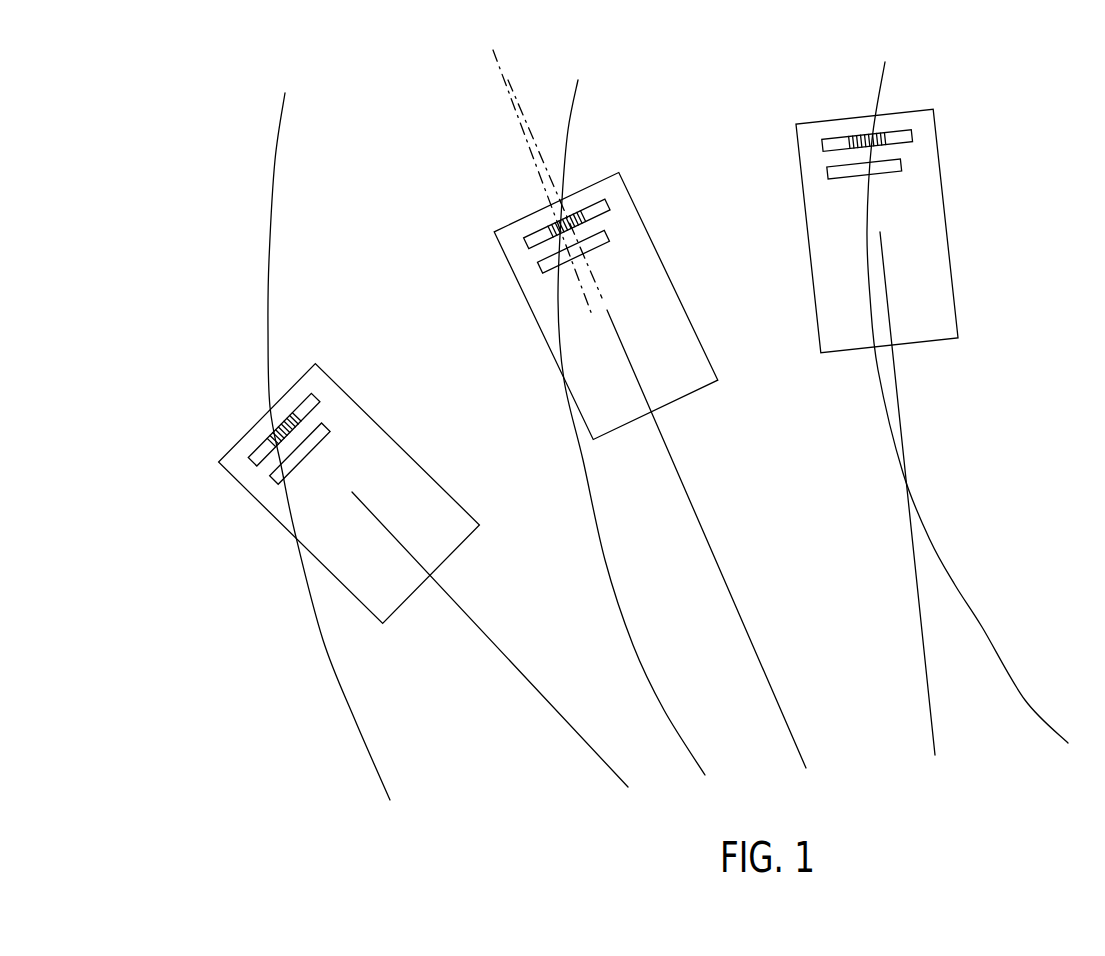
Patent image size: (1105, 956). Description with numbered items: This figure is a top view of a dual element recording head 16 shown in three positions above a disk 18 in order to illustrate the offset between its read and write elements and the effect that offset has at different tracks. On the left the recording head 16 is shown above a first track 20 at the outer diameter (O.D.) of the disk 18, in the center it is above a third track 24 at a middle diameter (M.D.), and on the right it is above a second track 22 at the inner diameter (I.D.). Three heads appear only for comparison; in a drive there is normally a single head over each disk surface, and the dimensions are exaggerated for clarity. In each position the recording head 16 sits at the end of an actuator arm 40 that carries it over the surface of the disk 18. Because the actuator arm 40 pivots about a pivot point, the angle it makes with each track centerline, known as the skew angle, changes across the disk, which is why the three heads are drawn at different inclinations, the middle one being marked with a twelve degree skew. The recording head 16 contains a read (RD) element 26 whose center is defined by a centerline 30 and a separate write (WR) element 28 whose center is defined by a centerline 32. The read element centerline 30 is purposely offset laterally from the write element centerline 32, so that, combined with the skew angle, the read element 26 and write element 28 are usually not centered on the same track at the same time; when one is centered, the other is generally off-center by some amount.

The dual element recording head 16 is at (340, 378).
The disk 18 is at (391, 160).
The first track 20 is at (283, 130).
The second track 22 is at (885, 68).
The third track 24 is at (578, 93).
The read element 26 is at (275, 477).
The write element 28 is at (255, 448).
The read element centerline 30 is at (517, 138).
The write element centerline 32 is at (508, 80).
The actuator arm 40 is at (587, 747).